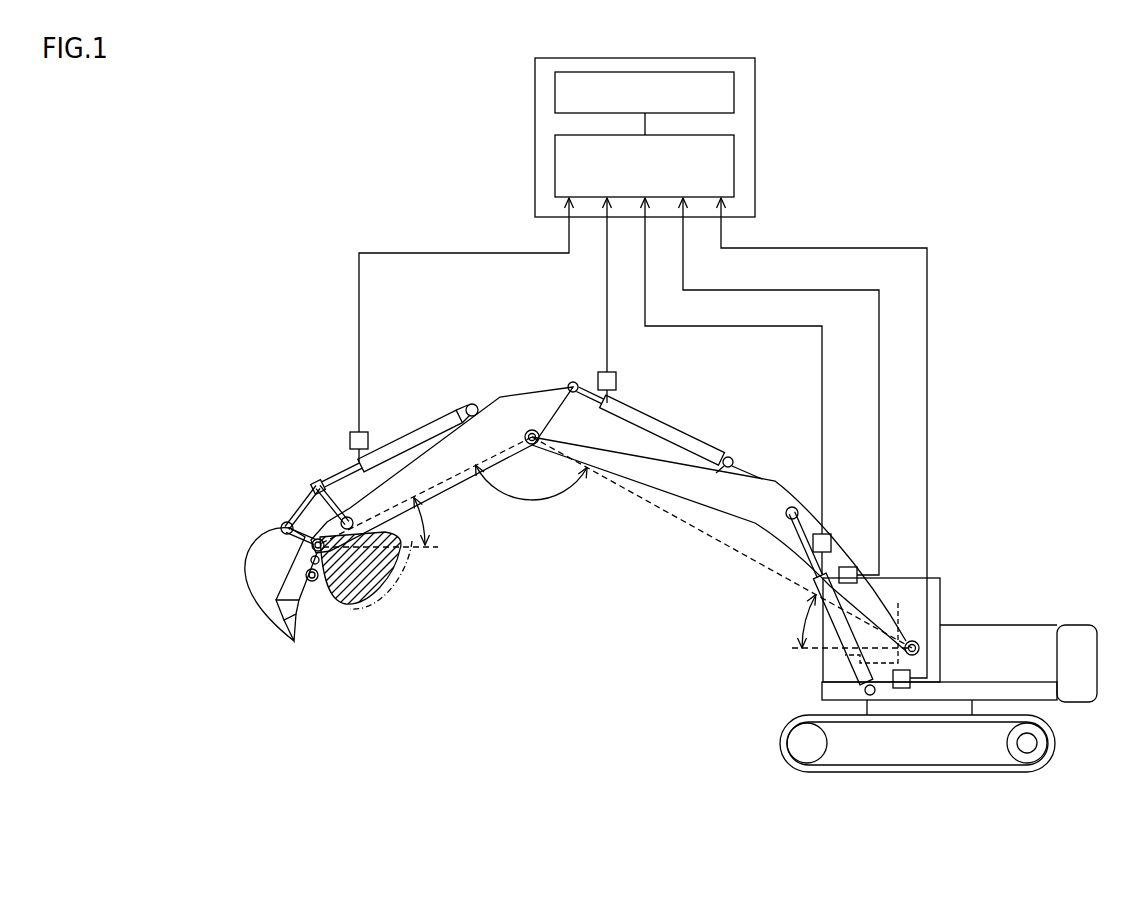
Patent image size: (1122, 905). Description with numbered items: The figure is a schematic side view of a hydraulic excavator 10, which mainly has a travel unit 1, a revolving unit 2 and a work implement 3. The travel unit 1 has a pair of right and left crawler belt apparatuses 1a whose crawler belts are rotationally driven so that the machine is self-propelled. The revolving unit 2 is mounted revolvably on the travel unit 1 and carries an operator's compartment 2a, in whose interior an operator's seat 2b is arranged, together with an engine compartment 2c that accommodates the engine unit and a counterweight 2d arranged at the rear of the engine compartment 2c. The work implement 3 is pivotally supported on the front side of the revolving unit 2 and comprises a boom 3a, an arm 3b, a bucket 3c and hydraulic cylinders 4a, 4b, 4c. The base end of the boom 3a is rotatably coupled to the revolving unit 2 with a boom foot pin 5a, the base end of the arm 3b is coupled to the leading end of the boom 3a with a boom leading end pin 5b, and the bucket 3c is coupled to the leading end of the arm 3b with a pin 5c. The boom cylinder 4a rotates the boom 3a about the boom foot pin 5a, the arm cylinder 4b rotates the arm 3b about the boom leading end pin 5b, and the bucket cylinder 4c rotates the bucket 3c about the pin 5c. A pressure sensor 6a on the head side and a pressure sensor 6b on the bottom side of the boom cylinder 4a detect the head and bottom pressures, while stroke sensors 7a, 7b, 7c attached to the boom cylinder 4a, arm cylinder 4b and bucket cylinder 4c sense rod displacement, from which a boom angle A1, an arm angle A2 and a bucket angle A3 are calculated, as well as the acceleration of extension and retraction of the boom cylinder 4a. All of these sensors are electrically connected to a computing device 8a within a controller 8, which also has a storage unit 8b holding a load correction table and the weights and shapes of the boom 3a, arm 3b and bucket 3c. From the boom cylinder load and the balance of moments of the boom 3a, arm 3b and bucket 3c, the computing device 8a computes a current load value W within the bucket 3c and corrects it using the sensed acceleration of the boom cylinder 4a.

The travel unit 1 is at (917, 770).
The crawler belt apparatus 1a is at (983, 773).
The revolving unit 2 is at (959, 615).
The operator's compartment 2a is at (937, 578).
The operator's seat 2b is at (898, 603).
The engine compartment 2c is at (1018, 628).
The counterweight 2d is at (1072, 630).
The work implement 3 is at (609, 516).
The boom 3a is at (787, 498).
The arm 3b is at (508, 410).
The bucket 3c is at (268, 556).
The boom cylinder 4a is at (860, 673).
The arm cylinder 4b is at (652, 428).
The bucket cylinder 4c is at (405, 441).
The boom foot pin 5a is at (917, 640).
The boom leading end pin 5b is at (530, 430).
The pin 5c is at (312, 536).
The pressure sensor 6a is at (848, 566).
The pressure sensor 6b is at (911, 672).
The stroke sensor 7a is at (823, 533).
The stroke sensor 7b is at (617, 378).
The stroke sensor 7c is at (350, 440).
The controller 8 is at (669, 137).
The computing device 8a is at (736, 162).
The storage unit 8b is at (736, 92).
The hydraulic excavator 10 is at (666, 589).
The boom angle A1 is at (796, 621).
The arm angle A2 is at (531, 496).
The bucket angle A3 is at (435, 521).
The current load value W is at (357, 560).